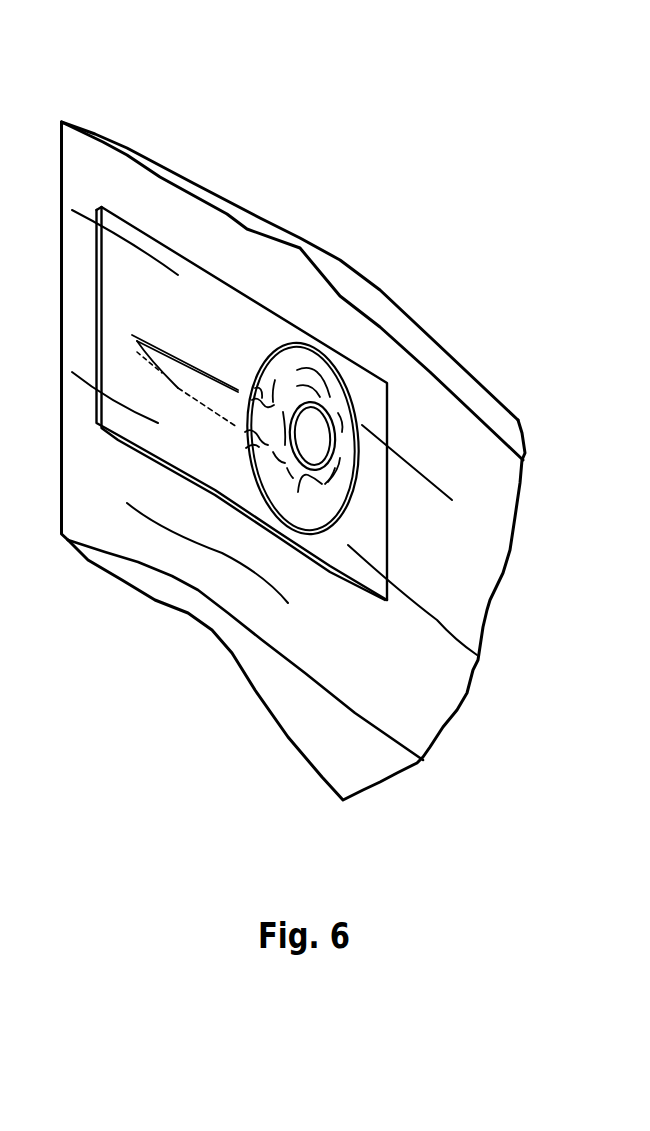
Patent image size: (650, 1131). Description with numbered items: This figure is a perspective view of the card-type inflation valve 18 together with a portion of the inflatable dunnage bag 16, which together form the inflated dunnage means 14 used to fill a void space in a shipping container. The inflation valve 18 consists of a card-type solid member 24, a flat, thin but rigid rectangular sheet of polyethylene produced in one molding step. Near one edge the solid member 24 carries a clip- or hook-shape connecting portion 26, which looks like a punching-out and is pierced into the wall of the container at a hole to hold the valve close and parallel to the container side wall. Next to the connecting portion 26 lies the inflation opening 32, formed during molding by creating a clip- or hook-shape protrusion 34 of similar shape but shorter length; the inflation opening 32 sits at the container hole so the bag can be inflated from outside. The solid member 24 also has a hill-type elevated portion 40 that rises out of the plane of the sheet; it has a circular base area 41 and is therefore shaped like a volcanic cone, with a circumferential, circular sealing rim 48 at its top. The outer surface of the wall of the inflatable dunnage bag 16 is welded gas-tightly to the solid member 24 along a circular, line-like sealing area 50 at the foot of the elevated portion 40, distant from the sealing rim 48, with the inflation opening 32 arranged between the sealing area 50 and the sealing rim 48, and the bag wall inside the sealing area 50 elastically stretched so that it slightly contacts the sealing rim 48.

The inflated dunnage means 14 is at (116, 134).
The inflatable dunnage bag 16 is at (178, 177).
The inflation valve 18 is at (232, 470).
The card-type solid member 24 is at (232, 290).
The clip- or hook-shape connecting portion 26 is at (165, 364).
The inflation opening 32 is at (257, 390).
The clip- or hook-shape protrusion 34 is at (253, 442).
The hill-type elevated portion 40 is at (321, 495).
The circular base area 41 is at (357, 472).
The sealing rim 48 is at (330, 441).
The sealing area 50 is at (347, 510).